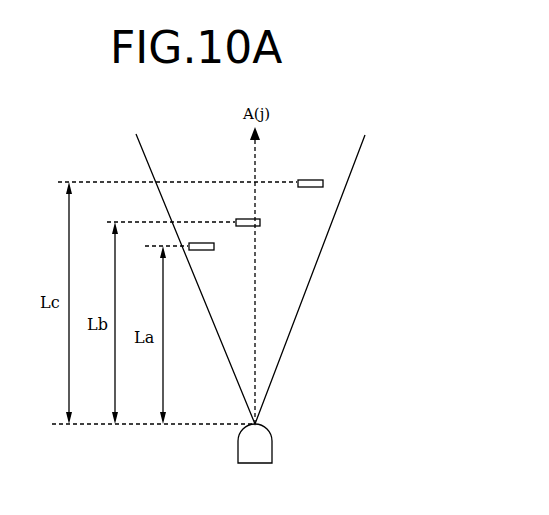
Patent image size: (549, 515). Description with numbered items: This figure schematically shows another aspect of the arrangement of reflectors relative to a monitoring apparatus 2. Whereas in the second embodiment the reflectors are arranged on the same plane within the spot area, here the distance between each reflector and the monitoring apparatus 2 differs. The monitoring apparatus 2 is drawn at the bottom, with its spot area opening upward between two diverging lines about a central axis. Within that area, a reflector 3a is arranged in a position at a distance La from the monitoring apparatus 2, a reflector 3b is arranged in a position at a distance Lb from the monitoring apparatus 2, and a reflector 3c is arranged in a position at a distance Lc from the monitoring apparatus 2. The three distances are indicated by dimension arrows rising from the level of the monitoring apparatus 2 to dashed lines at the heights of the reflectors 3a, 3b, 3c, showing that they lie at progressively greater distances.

The monitoring apparatus 2 is at (272, 446).
The reflector 3a is at (200, 250).
The reflector 3b is at (243, 226).
The reflector 3c is at (309, 187).